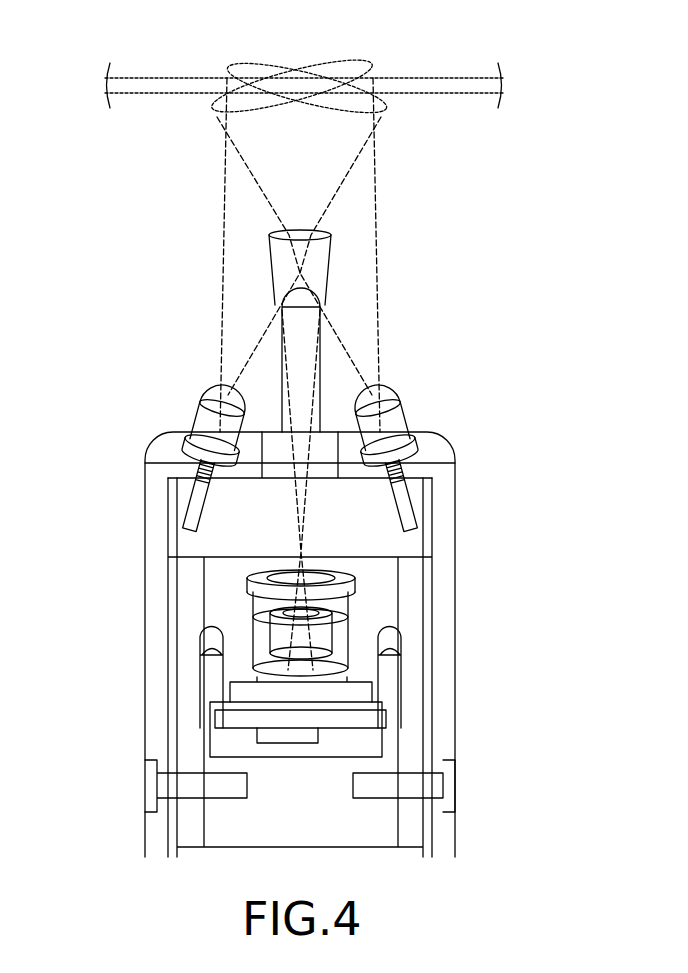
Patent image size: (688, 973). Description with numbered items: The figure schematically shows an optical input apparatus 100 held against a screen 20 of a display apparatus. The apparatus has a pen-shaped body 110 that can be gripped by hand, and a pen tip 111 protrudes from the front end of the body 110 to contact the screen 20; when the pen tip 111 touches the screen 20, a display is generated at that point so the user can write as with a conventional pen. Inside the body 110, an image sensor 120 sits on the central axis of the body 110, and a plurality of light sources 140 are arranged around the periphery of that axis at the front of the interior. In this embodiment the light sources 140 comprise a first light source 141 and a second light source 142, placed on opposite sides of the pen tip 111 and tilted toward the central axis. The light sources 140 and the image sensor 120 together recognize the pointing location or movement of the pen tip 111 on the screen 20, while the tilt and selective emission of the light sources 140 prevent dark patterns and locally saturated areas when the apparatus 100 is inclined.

The screen 20 is at (408, 80).
The optical input apparatus 100 is at (302, 573).
The body 110 is at (455, 683).
The pen tip 111 is at (303, 347).
The image sensor 120 is at (372, 609).
The light sources 140 is at (302, 623).
The first light source 141 is at (197, 427).
The second light source 142 is at (405, 425).